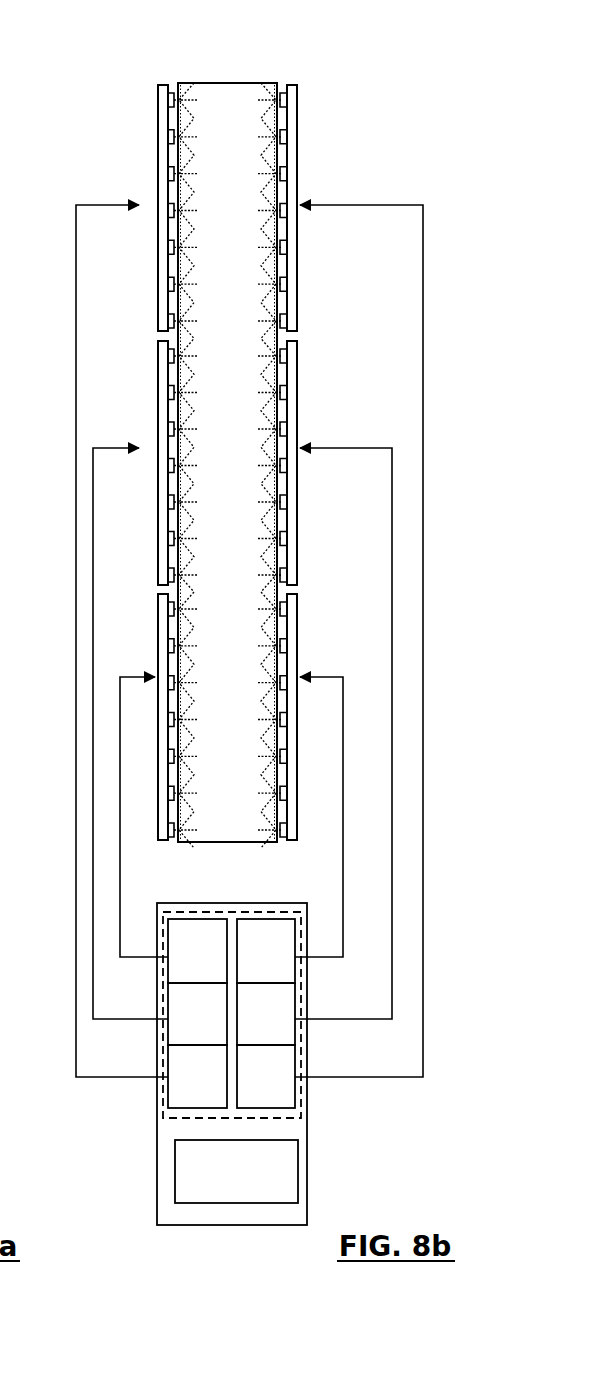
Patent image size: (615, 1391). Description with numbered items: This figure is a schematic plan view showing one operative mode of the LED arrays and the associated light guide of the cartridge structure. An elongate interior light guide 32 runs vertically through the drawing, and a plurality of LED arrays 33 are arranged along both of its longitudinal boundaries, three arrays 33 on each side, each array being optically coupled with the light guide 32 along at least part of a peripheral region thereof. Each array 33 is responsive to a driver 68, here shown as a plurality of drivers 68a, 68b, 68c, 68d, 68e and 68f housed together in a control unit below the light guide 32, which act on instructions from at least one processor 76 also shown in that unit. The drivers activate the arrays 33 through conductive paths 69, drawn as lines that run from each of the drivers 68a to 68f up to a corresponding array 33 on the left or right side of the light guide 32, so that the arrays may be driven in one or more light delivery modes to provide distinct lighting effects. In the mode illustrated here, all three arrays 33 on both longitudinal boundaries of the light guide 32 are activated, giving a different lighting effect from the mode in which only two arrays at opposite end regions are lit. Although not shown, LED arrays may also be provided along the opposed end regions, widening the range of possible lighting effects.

The interior light guide 32 is at (231, 82).
The LED array 33 is at (157, 147).
The conductive path 69 is at (74, 412).
The driver 68 is at (232, 1036).
The driver 68a is at (197, 951).
The driver 68b is at (197, 1014).
The driver 68c is at (197, 1076).
The driver 68d is at (266, 951).
The driver 68e is at (266, 1014).
The driver 68f is at (266, 1076).
The processor 76 is at (236, 1171).